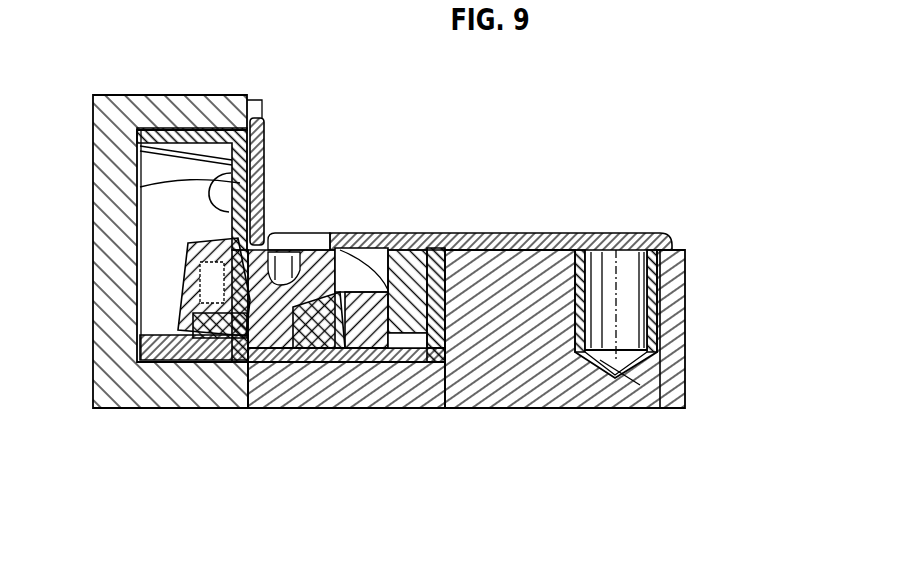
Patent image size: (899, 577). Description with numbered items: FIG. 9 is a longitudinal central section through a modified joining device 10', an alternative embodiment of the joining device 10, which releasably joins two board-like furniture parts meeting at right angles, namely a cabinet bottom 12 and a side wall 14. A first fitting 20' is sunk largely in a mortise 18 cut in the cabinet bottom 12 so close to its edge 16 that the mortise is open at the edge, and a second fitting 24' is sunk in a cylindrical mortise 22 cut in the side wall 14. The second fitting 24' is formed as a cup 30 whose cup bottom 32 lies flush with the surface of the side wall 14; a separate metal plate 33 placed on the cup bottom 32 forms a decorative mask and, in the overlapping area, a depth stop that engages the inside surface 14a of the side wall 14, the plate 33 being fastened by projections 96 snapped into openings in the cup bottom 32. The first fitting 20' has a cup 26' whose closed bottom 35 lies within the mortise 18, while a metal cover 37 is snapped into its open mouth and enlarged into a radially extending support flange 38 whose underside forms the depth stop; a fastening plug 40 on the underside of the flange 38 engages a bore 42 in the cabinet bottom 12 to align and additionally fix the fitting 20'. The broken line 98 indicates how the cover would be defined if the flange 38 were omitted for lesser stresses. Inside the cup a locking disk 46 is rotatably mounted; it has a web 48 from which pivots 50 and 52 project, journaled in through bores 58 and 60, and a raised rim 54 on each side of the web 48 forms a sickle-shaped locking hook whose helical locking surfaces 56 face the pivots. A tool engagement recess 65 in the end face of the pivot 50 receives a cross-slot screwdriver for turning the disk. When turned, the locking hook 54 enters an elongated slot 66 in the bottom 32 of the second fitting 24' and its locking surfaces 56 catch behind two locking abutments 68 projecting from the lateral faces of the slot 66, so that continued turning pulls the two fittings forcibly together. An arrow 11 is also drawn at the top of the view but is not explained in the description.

The joining device 10 is at (311, 502).
The joining device 10' is at (454, 104).
The direction of flow 11 is at (386, 90).
The cabinet bottom 12 is at (676, 250).
The side wall 14 is at (222, 108).
The inside surface of the side wall 14a is at (247, 101).
The edge 16 is at (240, 405).
The mortise 18 is at (462, 408).
The first fitting 20' is at (518, 155).
The mortise 22 is at (140, 148).
The second fitting 24' is at (321, 116).
The cup 26' is at (512, 427).
The cup 30 is at (150, 355).
The cup bottom 32 is at (235, 203).
The metal plate 33 is at (265, 127).
The closed bottom 35 is at (428, 410).
The metal cover 37 is at (452, 231).
The support flange 38 is at (560, 238).
The fastening plug 40 is at (592, 409).
The bore 42 is at (662, 409).
The locking disk 46 is at (290, 405).
The web 48 is at (362, 240).
The pivot 50 is at (260, 400).
The pivot 52 is at (282, 245).
The raised rim 54 is at (388, 405).
The locking surfaces 56 is at (405, 237).
The through bore 58 is at (320, 245).
The through bore 60 is at (190, 408).
The tool engagement recess 65 is at (300, 236).
The elongated slot 66 is at (215, 300).
The locking abutments 68 is at (210, 284).
The projections 96 is at (140, 187).
The broken line 98 is at (472, 236).